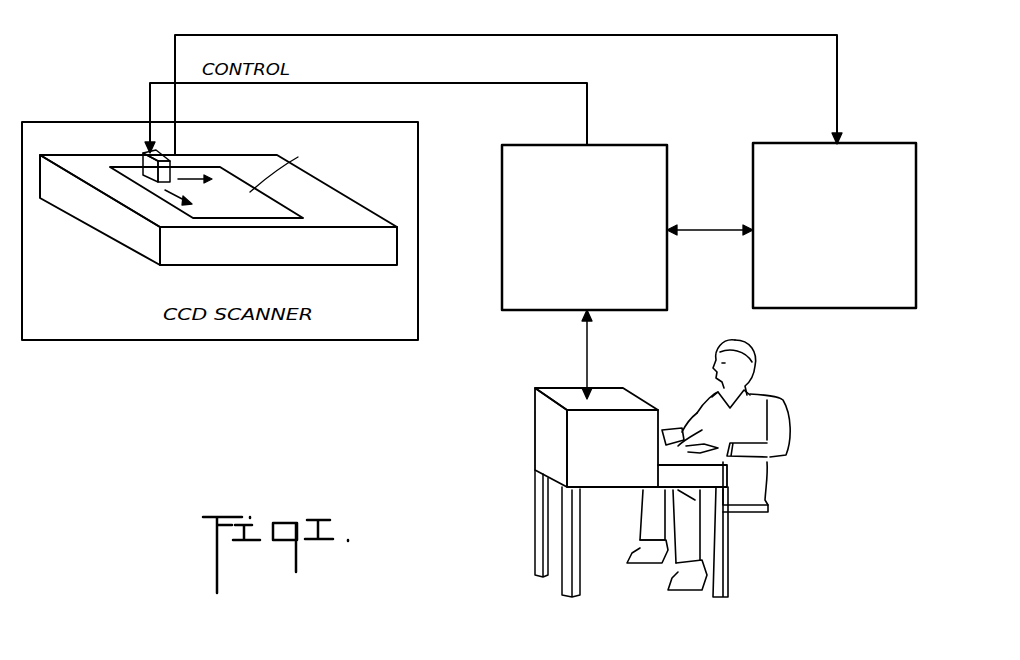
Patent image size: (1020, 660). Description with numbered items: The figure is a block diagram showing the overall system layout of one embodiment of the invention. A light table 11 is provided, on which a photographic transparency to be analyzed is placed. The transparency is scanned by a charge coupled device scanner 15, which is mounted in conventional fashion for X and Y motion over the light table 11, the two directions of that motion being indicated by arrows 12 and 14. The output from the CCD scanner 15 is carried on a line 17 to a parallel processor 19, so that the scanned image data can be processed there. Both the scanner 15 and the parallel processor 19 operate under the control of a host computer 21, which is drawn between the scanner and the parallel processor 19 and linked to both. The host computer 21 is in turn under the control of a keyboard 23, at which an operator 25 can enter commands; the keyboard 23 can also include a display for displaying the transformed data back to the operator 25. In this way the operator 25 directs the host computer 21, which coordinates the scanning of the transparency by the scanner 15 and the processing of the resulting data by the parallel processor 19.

The light table 11 is at (350, 265).
The arrow indicating X motion 12 is at (193, 178).
The arrow indicating Y motion 14 is at (166, 188).
The charge coupled device scanner 15 is at (143, 158).
The line 17 is at (437, 33).
The parallel processor 19 is at (857, 305).
The host computer 21 is at (510, 312).
The keyboard 23 is at (532, 400).
The operator 25 is at (777, 398).